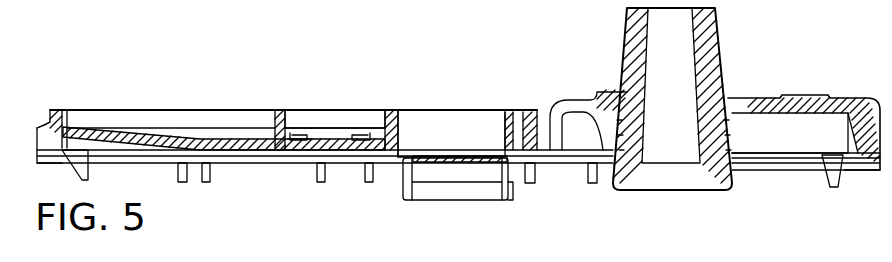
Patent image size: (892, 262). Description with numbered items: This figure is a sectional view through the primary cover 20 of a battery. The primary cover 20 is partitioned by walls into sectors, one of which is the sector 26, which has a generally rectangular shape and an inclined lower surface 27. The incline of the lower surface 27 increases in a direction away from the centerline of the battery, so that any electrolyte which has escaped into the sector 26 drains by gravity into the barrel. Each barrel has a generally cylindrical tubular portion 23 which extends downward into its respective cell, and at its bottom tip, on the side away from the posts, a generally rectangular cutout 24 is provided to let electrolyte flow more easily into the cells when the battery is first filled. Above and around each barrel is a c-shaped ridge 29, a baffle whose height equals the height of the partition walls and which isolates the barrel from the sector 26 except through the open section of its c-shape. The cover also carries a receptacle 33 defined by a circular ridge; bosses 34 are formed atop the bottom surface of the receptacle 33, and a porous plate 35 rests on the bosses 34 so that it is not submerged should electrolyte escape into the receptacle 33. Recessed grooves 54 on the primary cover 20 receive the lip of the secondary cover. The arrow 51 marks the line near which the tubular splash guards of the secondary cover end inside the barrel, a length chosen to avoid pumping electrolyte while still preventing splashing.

The primary cover 20 is at (748, 82).
The tubular portion 23 is at (513, 187).
The cutout 24 is at (403, 185).
The sector 26 is at (157, 113).
The lower surface 27 is at (147, 130).
The c-shaped ridge 29 is at (537, 111).
The receptacle 33 is at (302, 115).
The bosses 34 is at (367, 133).
The porous plate 35 is at (293, 135).
The arrow 51 is at (472, 190).
The recessed grooves 54 is at (37, 106).